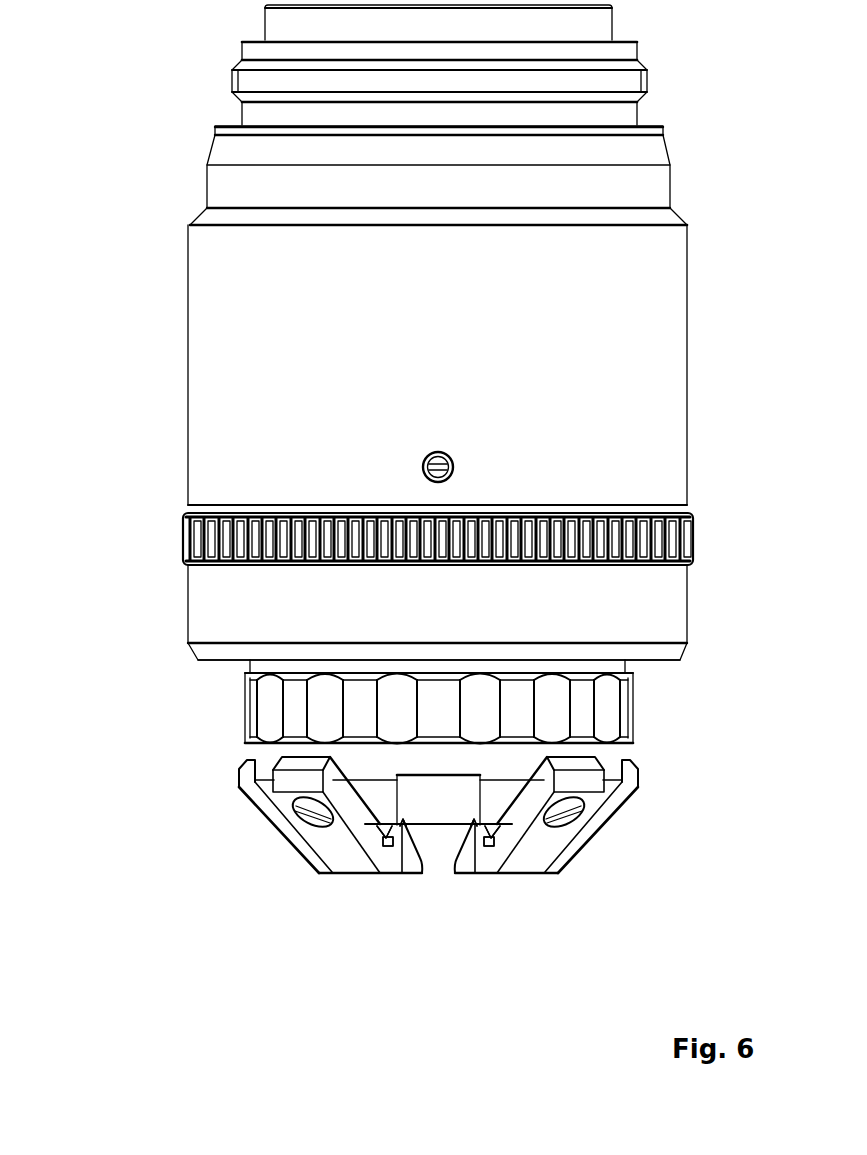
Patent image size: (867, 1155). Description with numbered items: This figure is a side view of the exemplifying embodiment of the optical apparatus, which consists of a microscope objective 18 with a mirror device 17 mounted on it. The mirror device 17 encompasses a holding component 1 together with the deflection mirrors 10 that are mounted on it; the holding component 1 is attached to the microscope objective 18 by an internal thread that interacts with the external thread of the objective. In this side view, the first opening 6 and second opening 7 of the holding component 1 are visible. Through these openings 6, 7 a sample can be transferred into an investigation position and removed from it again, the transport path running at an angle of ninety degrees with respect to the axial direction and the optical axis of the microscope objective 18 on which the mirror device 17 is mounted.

The microscope objective 18 is at (126, 310).
The holding component 1 is at (273, 757).
The mirror device 17 is at (186, 894).
The deflection mirror 10 is at (562, 848).
The first opening 6 is at (445, 866).
The second opening 7 is at (465, 873).